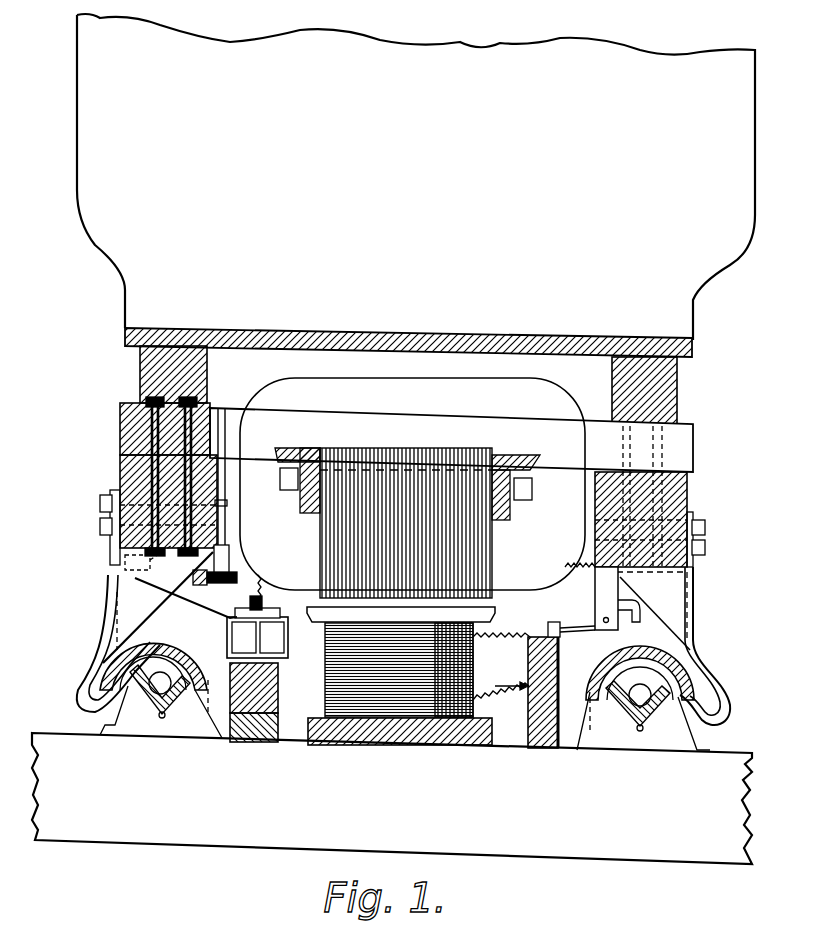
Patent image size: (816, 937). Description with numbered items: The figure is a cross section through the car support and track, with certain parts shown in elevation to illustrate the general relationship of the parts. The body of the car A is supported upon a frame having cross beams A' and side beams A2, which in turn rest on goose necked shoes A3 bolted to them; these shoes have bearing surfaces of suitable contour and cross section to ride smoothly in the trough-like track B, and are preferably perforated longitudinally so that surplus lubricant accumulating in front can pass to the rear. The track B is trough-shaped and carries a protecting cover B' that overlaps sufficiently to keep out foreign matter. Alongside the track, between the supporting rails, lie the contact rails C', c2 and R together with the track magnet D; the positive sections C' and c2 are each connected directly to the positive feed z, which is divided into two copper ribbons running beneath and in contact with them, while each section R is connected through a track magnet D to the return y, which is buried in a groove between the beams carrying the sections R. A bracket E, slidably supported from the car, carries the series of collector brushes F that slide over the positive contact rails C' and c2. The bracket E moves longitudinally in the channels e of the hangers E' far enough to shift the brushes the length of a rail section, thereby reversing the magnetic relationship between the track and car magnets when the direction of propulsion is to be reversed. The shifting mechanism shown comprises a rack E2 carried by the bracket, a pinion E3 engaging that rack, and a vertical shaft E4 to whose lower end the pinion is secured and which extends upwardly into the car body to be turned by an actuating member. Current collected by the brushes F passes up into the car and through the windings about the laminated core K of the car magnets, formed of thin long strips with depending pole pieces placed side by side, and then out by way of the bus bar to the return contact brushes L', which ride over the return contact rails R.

The body of the car A is at (416, 219).
The cross beams A' is at (477, 440).
The side beams A2 is at (700, 490).
The goose necked shoes A3 is at (105, 655).
The track B is at (405, 709).
The protecting cover B' is at (397, 654).
The laminated core K is at (492, 560).
The track magnet D is at (473, 664).
The contact rail sections R is at (540, 636).
The return contact brushes L' is at (600, 597).
The return y is at (538, 687).
The positive feed z is at (278, 683).
The contact rail sections C' is at (273, 633).
The contact rail sections c2 is at (244, 637).
The collector brushes F is at (272, 637).
The bracket E is at (182, 607).
The hangers E' is at (244, 491).
The rack E2 is at (160, 600).
The pinion E3 is at (230, 584).
The vertical shaft E4 is at (225, 497).
The channels e is at (150, 562).